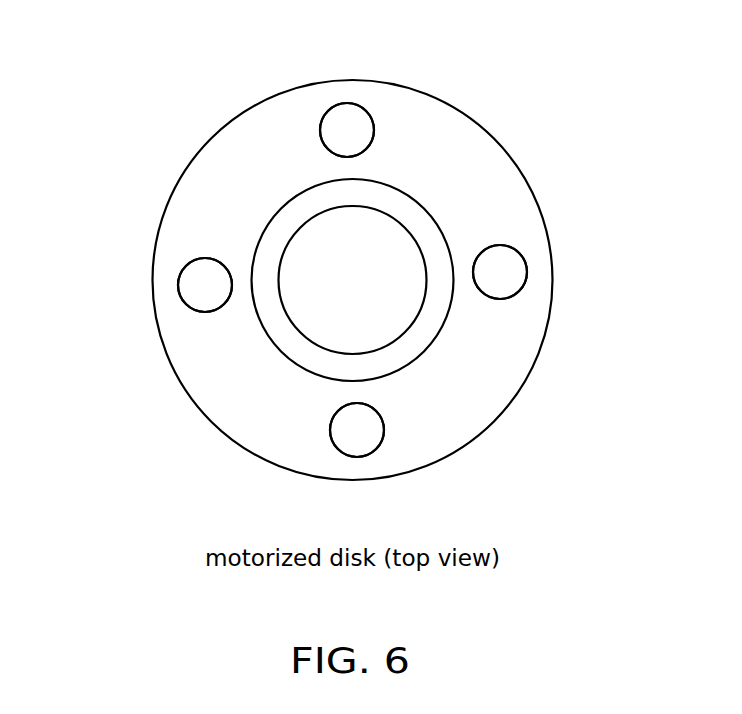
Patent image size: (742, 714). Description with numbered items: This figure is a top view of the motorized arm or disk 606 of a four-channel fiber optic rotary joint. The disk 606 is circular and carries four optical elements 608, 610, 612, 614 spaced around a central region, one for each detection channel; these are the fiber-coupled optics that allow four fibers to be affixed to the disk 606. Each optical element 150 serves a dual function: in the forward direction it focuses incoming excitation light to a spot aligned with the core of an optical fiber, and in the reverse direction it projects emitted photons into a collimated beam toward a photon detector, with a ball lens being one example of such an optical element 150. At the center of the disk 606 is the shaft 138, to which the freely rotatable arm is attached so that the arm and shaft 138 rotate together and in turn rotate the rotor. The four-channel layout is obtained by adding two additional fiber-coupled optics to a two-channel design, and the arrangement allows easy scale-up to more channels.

The motorized arm or disk 606 is at (593, 147).
The shaft 138 is at (405, 227).
The optical element 150 is at (192, 252).
The optical element 608 is at (339, 103).
The optical element 610 is at (528, 270).
The optical element 612 is at (378, 450).
The optical element 614 is at (177, 280).